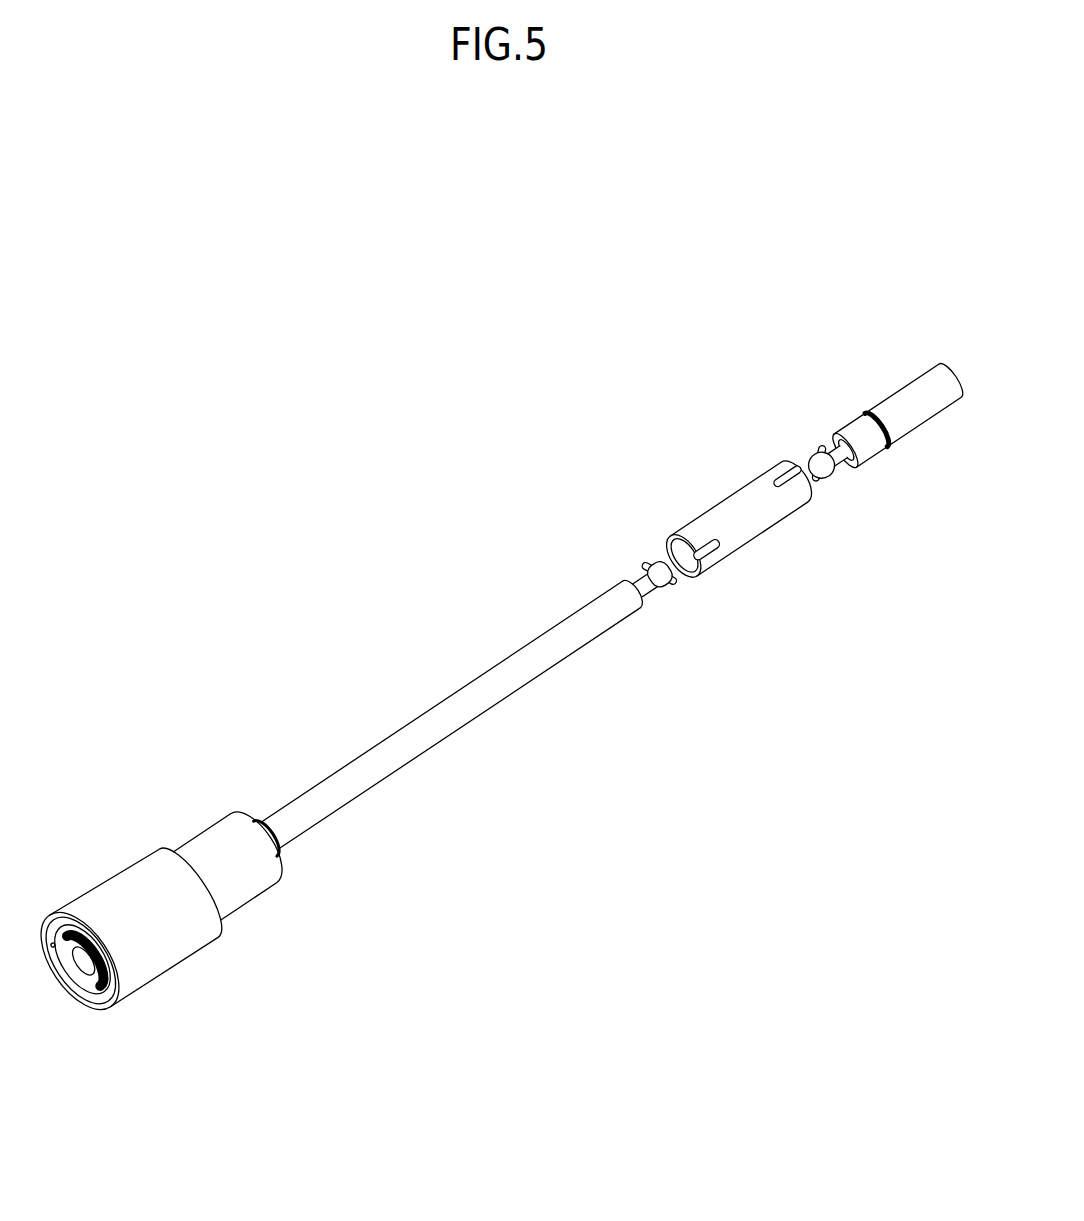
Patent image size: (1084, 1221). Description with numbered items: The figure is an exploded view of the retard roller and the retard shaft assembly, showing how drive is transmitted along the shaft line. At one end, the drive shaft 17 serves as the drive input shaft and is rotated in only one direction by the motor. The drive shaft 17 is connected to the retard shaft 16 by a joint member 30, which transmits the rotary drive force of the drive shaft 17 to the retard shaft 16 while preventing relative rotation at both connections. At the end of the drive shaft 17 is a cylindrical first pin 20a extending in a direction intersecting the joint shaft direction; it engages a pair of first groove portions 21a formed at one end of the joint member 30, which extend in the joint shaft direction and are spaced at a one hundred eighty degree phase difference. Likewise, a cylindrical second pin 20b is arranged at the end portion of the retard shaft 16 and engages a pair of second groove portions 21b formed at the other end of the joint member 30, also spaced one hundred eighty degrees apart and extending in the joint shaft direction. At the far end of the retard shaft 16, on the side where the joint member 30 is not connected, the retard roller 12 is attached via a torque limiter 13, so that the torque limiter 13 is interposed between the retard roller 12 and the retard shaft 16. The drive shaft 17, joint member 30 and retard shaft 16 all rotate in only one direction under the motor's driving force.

The retard roller 12 is at (107, 878).
The torque limiter 13 is at (205, 825).
The retard shaft 16 is at (318, 780).
The drive shaft 17 is at (880, 403).
The first pin 20a is at (822, 448).
The second pin 20b is at (638, 565).
The first groove portions 21a is at (792, 468).
The second groove portions 21b is at (695, 577).
The joint member 30 is at (707, 512).